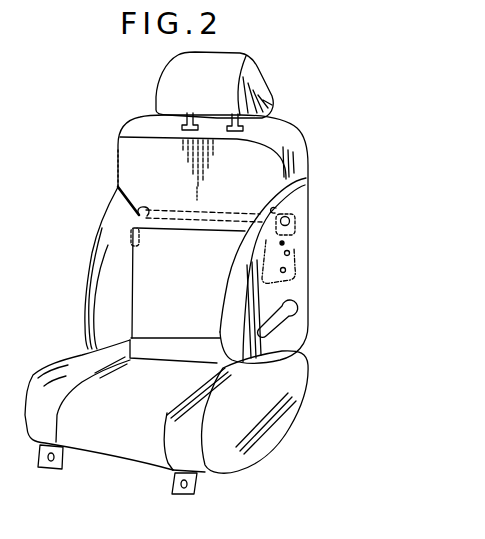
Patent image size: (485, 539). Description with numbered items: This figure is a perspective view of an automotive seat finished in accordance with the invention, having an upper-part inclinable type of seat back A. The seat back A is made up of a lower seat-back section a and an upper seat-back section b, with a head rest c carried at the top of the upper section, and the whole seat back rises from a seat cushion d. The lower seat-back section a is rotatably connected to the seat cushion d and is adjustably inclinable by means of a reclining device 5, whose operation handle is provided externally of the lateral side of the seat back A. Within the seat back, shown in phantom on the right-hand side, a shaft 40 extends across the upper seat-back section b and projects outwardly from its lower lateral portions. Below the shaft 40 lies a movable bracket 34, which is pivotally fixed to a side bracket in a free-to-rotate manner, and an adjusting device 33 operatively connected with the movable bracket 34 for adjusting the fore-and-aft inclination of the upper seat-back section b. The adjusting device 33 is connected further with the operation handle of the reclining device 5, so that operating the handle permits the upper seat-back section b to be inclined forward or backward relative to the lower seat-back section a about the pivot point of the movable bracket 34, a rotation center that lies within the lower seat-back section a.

The seat back A is at (74, 176).
The lower seat-back section a is at (150, 273).
The upper seat-back section b is at (130, 160).
The head rest c is at (166, 86).
The seat cushion d is at (276, 418).
The reclining device 5 is at (297, 318).
The adjusting device 33 is at (294, 268).
The movable bracket 34 is at (296, 232).
The shaft 40 is at (279, 209).